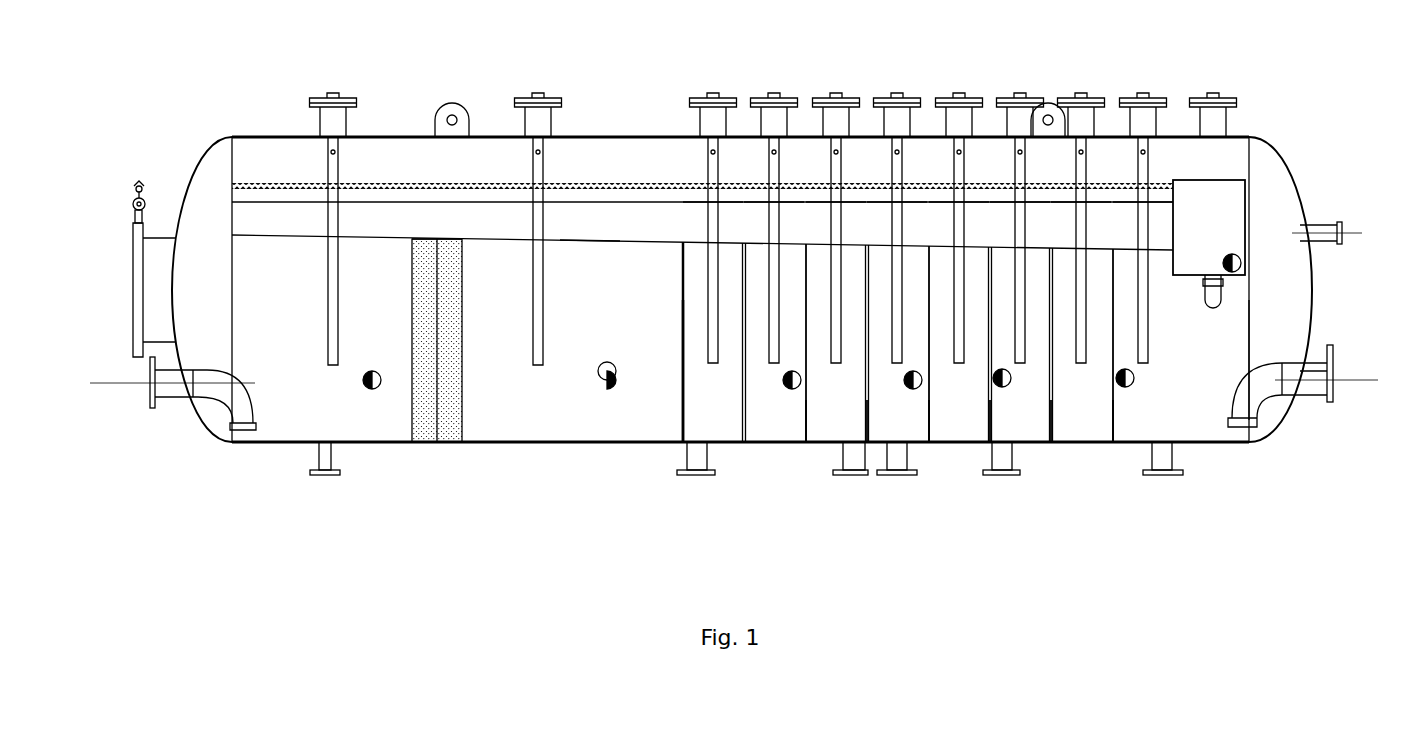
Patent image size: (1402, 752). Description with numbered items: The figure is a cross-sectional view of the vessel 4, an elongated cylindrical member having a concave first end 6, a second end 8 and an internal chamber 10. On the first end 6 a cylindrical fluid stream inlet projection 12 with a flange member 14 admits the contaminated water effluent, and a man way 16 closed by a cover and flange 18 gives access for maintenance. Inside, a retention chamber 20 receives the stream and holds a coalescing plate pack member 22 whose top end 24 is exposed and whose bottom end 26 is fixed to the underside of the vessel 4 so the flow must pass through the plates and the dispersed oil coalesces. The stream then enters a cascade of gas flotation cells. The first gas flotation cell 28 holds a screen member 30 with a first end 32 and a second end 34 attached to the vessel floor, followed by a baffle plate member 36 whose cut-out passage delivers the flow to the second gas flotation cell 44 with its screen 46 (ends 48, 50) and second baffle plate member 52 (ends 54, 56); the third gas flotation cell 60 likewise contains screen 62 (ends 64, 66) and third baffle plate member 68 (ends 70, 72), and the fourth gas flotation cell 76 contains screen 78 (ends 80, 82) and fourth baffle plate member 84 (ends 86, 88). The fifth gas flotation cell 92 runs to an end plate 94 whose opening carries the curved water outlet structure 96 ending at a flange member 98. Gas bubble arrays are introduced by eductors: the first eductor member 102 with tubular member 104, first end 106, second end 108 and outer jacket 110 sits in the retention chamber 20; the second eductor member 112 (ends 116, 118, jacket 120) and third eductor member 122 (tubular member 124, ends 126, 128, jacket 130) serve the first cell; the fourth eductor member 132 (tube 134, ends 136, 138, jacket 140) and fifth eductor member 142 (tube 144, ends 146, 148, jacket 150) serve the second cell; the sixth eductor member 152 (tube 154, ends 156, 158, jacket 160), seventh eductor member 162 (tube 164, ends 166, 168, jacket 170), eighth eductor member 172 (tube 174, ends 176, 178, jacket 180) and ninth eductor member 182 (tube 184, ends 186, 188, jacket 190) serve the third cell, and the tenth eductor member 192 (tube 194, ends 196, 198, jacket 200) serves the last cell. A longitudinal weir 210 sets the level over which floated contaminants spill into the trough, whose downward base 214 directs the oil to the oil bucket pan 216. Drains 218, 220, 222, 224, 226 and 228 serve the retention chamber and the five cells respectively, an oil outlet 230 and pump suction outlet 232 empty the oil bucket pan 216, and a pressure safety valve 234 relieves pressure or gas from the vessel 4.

The vessel 4 is at (512, 445).
The first end 6 is at (207, 136).
The second end 8 is at (1300, 175).
The internal chamber 10 is at (593, 137).
The fluid stream inlet projection 12 is at (195, 160).
The flange member 14 is at (148, 380).
The man way 16 is at (130, 228).
The cover and flange 18 is at (132, 247).
The retention chamber 20 is at (335, 347).
The coalescing plate pack member 22 is at (410, 257).
The top end 24 is at (452, 240).
The bottom end 26 is at (463, 435).
The first gas flotation cell 28 is at (635, 402).
The screen member 30 is at (681, 298).
The first end 32 is at (680, 245).
The second end 34 is at (682, 446).
The baffle plate member 36 is at (713, 366).
The second gas flotation cell 44 is at (781, 405).
The screen 46 is at (774, 366).
The first end 48 is at (805, 247).
The second end 50 is at (804, 446).
The second baffle plate member 52 is at (836, 366).
The first end 54 is at (866, 247).
The second end 56 is at (866, 446).
The third gas flotation cell 60 is at (904, 405).
The screen 62 is at (897, 366).
The first end 64 is at (928, 247).
The second end 66 is at (930, 446).
The third baffle plate member 68 is at (959, 366).
The first end 70 is at (989, 247).
The second end 72 is at (985, 443).
The fourth gas flotation cell 76 is at (1018, 404).
The screen 78 is at (1020, 366).
The first end 80 is at (1050, 247).
The second end 82 is at (1052, 446).
The fourth baffle plate member 84 is at (1081, 366).
The first end 86 is at (1112, 247).
The second end 88 is at (1113, 446).
The fifth gas flotation cell 92 is at (1234, 289).
The end plate 94 is at (1252, 352).
The water outlet structure 96 is at (1240, 395).
The flange member 98 is at (1333, 405).
The first eductor member 102 is at (298, 166).
The tubular member 104 is at (322, 229).
The first end 106 is at (321, 73).
The second end 108 is at (302, 270).
The outer jacket 110 is at (305, 102).
The second eductor member 112 is at (572, 163).
The first end 116 is at (526, 73).
The second end 118 is at (507, 270).
The outer jacket 120 is at (510, 102).
The third eductor member 122 is at (692, 216).
The tubular member 124 is at (737, 163).
The first end 126 is at (704, 73).
The second end 128 is at (707, 277).
The outer jacket 130 is at (686, 102).
The fourth eductor member 132 is at (753, 216).
The tubular member 134 is at (798, 163).
The first end 136 is at (765, 73).
The second end 138 is at (768, 277).
The outer jacket 140 is at (747, 102).
The fifth eductor member 142 is at (815, 216).
The tubular member 144 is at (860, 163).
The first end 146 is at (827, 73).
The second end 148 is at (830, 277).
The outer jacket 150 is at (809, 102).
The sixth eductor member 152 is at (876, 216).
The tubular member 154 is at (921, 163).
The first end 156 is at (888, 73).
The second end 158 is at (891, 277).
The outer jacket 160 is at (870, 102).
The seventh eductor member 162 is at (938, 216).
The tubular member 164 is at (983, 163).
The first end 166 is at (950, 73).
The second end 168 is at (953, 277).
The outer jacket 170 is at (932, 102).
The eighth eductor member 172 is at (999, 216).
The tubular member 174 is at (1044, 163).
The first end 176 is at (1011, 73).
The second end 178 is at (1014, 277).
The outer jacket 180 is at (993, 102).
The ninth eductor member 182 is at (1060, 216).
The tubular member 184 is at (1105, 163).
The first end 186 is at (1072, 73).
The second end 188 is at (1075, 277).
The outer jacket 190 is at (1054, 102).
The tenth eductor member 192 is at (1122, 216).
The tubular member 194 is at (1167, 163).
The first end 196 is at (1134, 73).
The second end 198 is at (1163, 262).
The outer jacket 200 is at (1116, 102).
The weir 210 is at (640, 245).
The base 214 is at (590, 249).
The oil bucket pan 216 is at (1209, 244).
The drain 218 is at (322, 458).
The drain 220 is at (688, 455).
The drain 222 is at (842, 460).
The drain 224 is at (910, 455).
The drain 226 is at (1013, 455).
The drain 228 is at (1173, 455).
The oil outlet 230 is at (1310, 232).
The outlet 232 is at (1313, 358).
The pressure safety valve 234 is at (1227, 125).